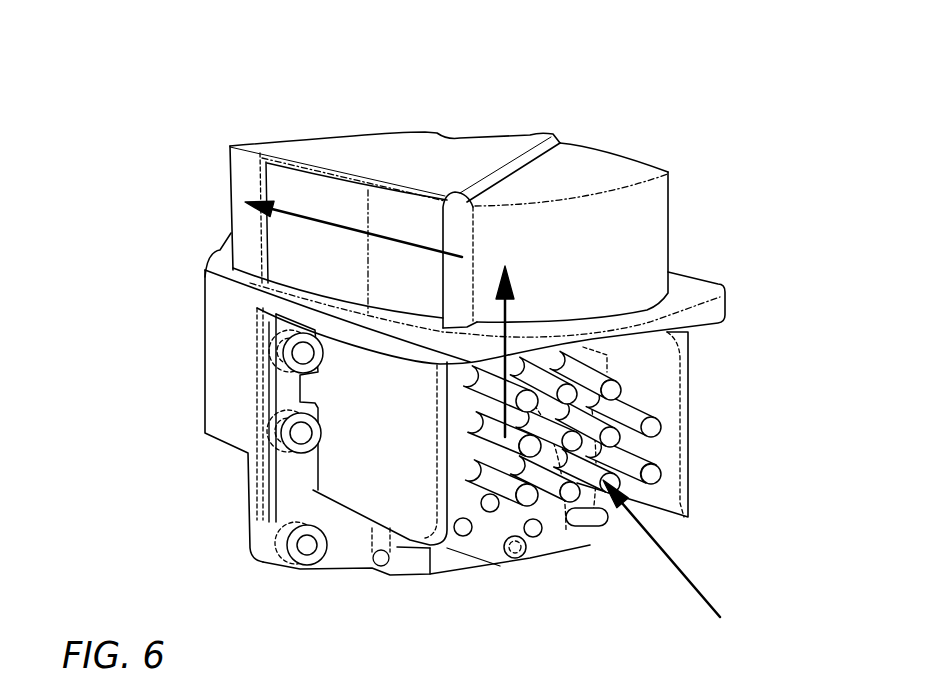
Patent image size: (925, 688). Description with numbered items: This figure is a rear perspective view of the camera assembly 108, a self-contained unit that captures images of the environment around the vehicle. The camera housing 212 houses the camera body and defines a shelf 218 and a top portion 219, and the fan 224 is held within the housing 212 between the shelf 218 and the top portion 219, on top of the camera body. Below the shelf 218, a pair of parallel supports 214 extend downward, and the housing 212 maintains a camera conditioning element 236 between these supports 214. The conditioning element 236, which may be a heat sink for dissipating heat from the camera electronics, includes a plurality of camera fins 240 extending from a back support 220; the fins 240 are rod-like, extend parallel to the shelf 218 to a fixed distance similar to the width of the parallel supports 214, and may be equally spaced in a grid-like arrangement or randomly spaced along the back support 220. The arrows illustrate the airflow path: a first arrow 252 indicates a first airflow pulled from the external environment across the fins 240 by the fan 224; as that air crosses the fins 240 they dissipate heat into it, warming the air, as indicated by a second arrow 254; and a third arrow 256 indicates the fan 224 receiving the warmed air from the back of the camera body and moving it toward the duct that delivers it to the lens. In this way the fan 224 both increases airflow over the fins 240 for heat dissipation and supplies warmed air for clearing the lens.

The camera assembly 108 is at (577, 76).
The camera housing 212 is at (191, 356).
The parallel supports 214 is at (377, 467).
The shelf 218 is at (215, 274).
The top portion 219 is at (315, 152).
The back support 220 is at (507, 560).
The fan 224 is at (578, 194).
The camera conditioning element 236 is at (253, 415).
The camera fins 240 is at (604, 480).
The first arrow 252 is at (683, 572).
The second arrow 254 is at (512, 314).
The third arrow 256 is at (341, 217).